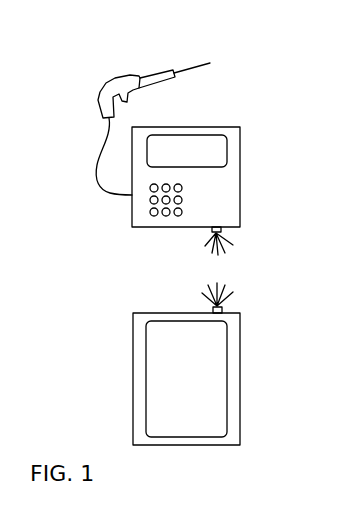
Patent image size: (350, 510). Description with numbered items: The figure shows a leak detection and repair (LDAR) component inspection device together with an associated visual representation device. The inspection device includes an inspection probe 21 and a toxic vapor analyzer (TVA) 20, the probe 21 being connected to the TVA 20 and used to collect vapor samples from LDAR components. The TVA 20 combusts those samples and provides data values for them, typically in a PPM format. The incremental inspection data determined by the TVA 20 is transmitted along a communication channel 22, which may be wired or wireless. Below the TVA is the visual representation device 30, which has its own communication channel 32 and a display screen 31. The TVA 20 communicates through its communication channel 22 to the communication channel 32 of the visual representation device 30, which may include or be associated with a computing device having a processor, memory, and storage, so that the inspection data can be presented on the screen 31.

The toxic vapor analyzer 20 is at (252, 192).
The inspection probe 21 is at (150, 68).
The communication channel 22 is at (222, 235).
The visual representation device 30 is at (248, 368).
The display screen 31 is at (162, 400).
The communication channel 32 is at (222, 310).